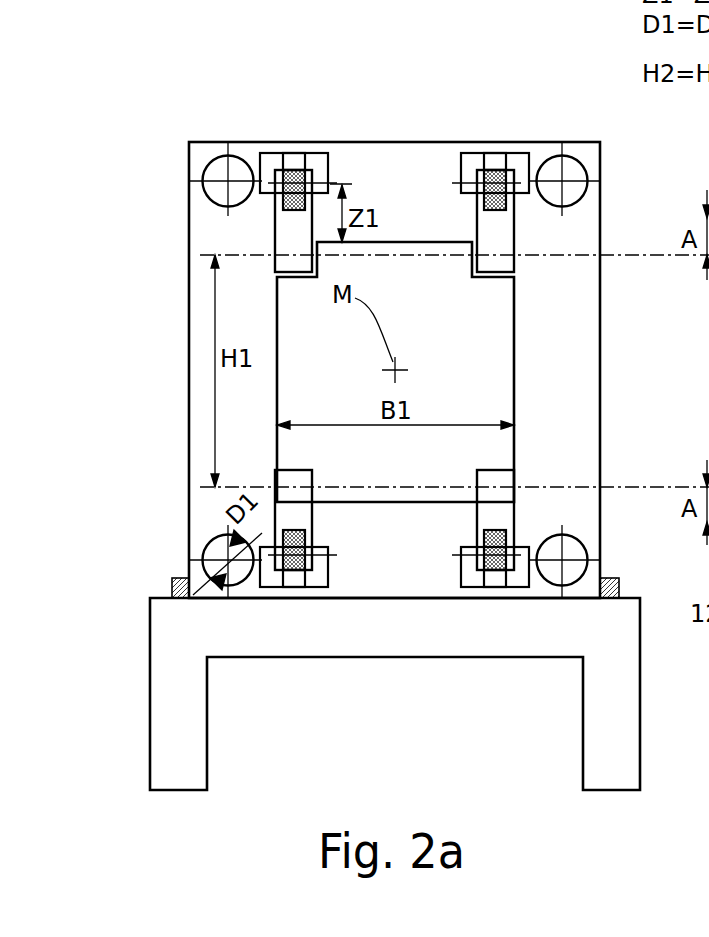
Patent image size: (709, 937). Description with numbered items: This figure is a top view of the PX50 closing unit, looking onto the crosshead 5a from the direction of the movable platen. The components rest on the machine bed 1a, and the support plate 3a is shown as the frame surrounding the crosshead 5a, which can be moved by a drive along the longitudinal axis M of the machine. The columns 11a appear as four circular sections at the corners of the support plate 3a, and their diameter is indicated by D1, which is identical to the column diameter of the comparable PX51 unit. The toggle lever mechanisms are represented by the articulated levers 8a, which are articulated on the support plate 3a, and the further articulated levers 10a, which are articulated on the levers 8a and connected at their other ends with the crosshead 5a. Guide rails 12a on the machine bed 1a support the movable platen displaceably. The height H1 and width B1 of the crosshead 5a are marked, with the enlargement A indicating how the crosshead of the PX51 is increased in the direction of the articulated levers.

The machine bed 1a is at (243, 638).
The support plate 3a is at (412, 152).
The crosshead 5a is at (485, 328).
The articulated lever to the support plate 8a is at (294, 163).
The articulated lever to the crosshead 10a is at (285, 233).
The columns 11a is at (222, 165).
The guide rails 12a is at (180, 592).